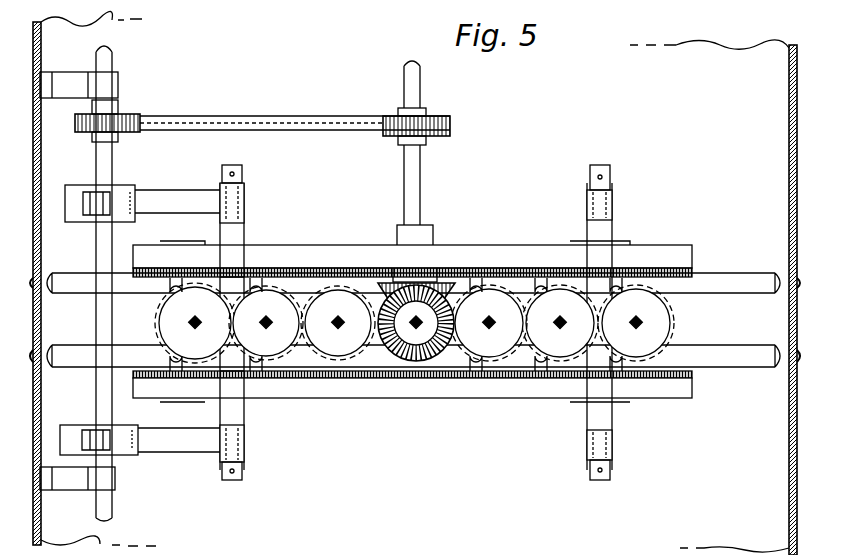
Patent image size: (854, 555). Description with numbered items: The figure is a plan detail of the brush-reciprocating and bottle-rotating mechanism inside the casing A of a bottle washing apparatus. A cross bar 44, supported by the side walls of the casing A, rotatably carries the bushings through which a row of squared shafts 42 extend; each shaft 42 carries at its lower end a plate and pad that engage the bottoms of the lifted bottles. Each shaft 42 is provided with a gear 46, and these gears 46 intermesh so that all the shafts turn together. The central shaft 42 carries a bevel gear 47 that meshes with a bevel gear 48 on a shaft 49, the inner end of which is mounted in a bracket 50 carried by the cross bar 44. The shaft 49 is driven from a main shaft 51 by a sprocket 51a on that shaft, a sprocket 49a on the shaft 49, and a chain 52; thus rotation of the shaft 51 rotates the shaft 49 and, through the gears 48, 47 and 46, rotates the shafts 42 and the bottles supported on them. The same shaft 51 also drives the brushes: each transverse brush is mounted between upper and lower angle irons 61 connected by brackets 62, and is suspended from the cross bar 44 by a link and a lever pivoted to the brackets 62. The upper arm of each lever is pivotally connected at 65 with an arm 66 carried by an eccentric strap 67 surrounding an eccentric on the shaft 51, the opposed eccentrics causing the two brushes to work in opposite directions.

The casing A is at (42, 525).
The squared shaft 42 is at (376, 323).
The cross bar 44 is at (736, 368).
The gear 46 is at (692, 325).
The bevel gear 47 is at (455, 326).
The bevel gear 48 is at (438, 283).
The shaft 49 is at (421, 190).
The sprocket 49a is at (398, 118).
The bracket 50 is at (398, 236).
The shaft 51 is at (96, 240).
The sprocket 51a is at (130, 118).
The chain 52 is at (295, 138).
The angle iron 61 is at (692, 262).
The bracket 62 is at (258, 400).
The pivot 65 is at (246, 237).
The arm 66 is at (193, 210).
The eccentric strap 67 is at (134, 190).